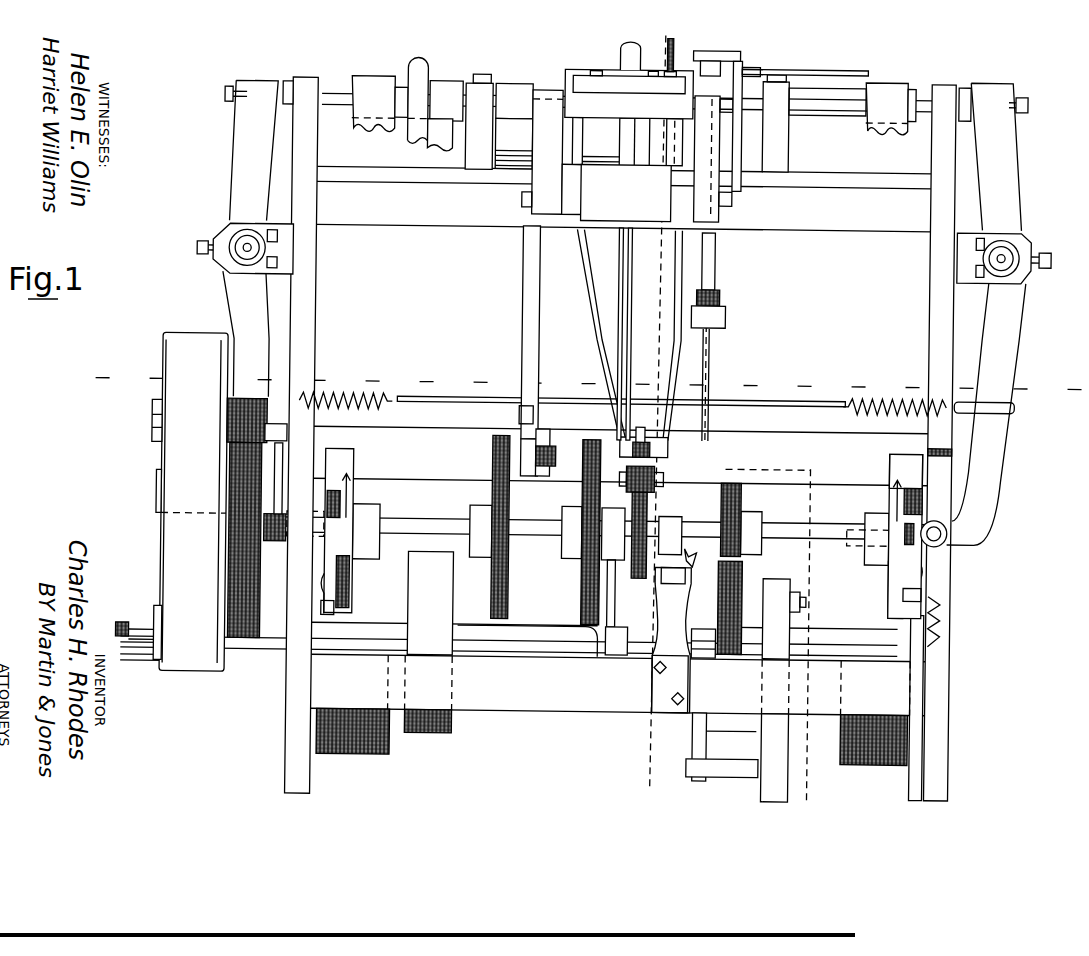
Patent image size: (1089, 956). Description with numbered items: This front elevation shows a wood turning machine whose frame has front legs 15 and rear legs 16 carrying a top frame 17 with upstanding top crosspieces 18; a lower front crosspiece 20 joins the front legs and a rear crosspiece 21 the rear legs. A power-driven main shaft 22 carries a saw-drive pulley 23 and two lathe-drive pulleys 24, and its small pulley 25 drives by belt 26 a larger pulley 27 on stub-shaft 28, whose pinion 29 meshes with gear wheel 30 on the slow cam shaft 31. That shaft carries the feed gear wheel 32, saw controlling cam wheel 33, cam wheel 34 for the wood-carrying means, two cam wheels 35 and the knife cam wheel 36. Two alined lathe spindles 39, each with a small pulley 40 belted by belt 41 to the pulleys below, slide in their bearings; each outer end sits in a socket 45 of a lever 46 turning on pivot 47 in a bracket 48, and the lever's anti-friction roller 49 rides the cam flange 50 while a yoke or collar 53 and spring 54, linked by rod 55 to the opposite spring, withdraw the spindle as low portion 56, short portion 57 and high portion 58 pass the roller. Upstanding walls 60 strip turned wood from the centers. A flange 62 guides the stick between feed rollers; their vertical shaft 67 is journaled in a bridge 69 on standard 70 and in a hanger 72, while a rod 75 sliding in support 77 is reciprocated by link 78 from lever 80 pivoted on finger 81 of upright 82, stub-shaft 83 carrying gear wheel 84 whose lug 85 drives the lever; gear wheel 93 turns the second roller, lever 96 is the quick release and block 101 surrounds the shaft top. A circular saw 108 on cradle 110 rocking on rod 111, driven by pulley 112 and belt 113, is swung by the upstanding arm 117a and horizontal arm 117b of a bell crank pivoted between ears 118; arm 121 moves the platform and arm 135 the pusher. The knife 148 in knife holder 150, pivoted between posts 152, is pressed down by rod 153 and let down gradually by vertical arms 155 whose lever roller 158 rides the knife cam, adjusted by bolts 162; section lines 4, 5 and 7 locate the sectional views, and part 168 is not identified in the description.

The section line 4— 4 is at (720, 51).
The section line 5— 5 is at (654, 413).
The section line 7— 7 is at (583, 385).
The front legs 15 is at (621, 439).
The rear legs 16 is at (939, 463).
The top frame 17 is at (623, 198).
The top crosspieces 18 is at (628, 122).
The lower front crosspiece 20 is at (618, 684).
The rear crosspiece 21 is at (620, 455).
The main shaft 22 is at (136, 660).
The saw-drive pulley 23 is at (430, 603).
The lathe-drive pulleys 24 is at (879, 778).
The small pulley 25 is at (150, 612).
The belt 26 is at (162, 563).
The larger pulley 27 is at (157, 492).
The stub-shaft 28 is at (152, 425).
The pinion 29 is at (246, 400).
The gear wheel 30 is at (232, 583).
The cam shaft 31 is at (416, 520).
The gear wheel 32 is at (742, 496).
The saw controlling cam wheel 33 is at (493, 494).
The cam wheel 34 is at (583, 577).
The cam wheels 35 is at (890, 460).
The cam wheel 36 is at (640, 580).
The lathe spindles 39 is at (332, 88).
The small pulley 40 is at (395, 90).
The belt 41 is at (366, 79).
The socket 45 is at (626, 97).
The lever 46 is at (205, 548).
The pivot 47 is at (235, 257).
The bracket 48 is at (225, 240).
The anti-friction roller 49 is at (950, 550).
The cam flange 50 is at (909, 458).
The yoke or collar 53 is at (283, 85).
The spring 54 is at (347, 398).
The rod 55 is at (824, 400).
The low portion 56 is at (351, 590).
The short portion 57 is at (325, 608).
The high portion 58 is at (324, 580).
The upstanding walls 60 is at (580, 134).
The upstanding flange 62 is at (824, 86).
The vertical shaft 67 is at (713, 277).
The horizontal bridge 69 is at (740, 60).
The forward standard 70 is at (738, 148).
The hanger 72 is at (724, 314).
The rod 75 is at (675, 583).
The support 77 is at (670, 673).
The link 78 is at (688, 550).
The lever 80 is at (726, 734).
The finger 81 is at (736, 776).
The upright 82 is at (814, 748).
The stub-shaft 83 is at (808, 603).
The gear wheel 84 is at (718, 655).
The lug 85 is at (745, 568).
The gear wheel 93 is at (718, 297).
The lever 96 is at (805, 68).
The block 101 is at (748, 55).
The circular saw 108 is at (669, 38).
The cradle 110 is at (514, 125).
The rod 111 is at (492, 158).
The small pulley 112 is at (445, 83).
The belt 113 is at (443, 135).
The upstanding arm 117a is at (521, 268).
The horizontal arm 117b is at (525, 447).
The ears 118 is at (547, 437).
The upstanding arm 121 is at (617, 250).
The upstanding arm 135 is at (626, 284).
The knife 148 is at (614, 82).
The knife holder 150 is at (629, 94).
The posts 152 is at (628, 156).
The vertically movable rod 153 is at (616, 52).
The vertical arms 155 is at (590, 268).
The anti-friction roller 158 is at (660, 473).
The bolts 162 is at (641, 427).
The roller 168 is at (416, 60).